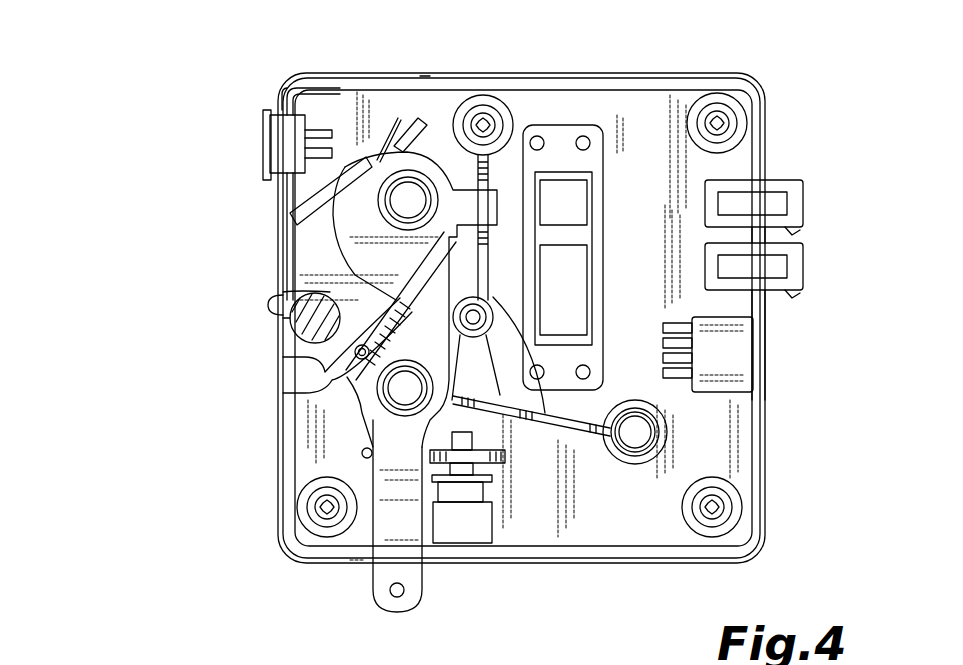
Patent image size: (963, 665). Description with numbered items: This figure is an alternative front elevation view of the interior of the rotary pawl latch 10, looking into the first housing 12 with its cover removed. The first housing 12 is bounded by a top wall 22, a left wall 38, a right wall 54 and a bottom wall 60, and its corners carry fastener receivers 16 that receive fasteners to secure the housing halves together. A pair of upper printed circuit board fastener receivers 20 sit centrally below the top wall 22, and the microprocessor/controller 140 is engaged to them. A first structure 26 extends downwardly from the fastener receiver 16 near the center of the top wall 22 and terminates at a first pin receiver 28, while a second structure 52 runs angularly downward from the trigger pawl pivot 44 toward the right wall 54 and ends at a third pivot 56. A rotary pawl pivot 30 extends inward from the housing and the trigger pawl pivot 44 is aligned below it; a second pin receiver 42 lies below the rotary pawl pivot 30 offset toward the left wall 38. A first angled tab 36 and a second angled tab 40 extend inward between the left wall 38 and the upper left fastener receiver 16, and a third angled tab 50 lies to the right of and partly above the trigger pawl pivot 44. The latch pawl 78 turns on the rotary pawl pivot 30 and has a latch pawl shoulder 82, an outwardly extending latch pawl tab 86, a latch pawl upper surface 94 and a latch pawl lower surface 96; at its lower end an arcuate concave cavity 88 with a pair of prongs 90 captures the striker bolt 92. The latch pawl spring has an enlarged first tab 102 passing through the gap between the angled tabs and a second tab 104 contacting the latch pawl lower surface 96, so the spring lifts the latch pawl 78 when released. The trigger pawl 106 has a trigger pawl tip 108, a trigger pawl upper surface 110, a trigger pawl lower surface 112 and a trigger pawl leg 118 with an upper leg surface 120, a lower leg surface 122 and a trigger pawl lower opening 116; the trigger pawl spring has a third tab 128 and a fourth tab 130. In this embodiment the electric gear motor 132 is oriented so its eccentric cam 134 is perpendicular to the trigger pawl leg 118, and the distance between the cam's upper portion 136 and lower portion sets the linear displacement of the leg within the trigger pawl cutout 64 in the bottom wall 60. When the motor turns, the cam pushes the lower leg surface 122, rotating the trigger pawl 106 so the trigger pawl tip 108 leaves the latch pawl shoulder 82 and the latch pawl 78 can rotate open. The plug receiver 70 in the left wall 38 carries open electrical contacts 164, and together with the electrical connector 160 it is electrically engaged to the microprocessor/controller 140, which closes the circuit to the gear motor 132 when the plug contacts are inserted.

The rotary pawl latch 10 is at (147, 100).
The first housing 12 is at (650, 127).
The fastener receivers 16 is at (488, 118).
The upper printed circuit board fastener receivers 20 is at (582, 138).
The top wall 22 is at (420, 76).
The first structure 26 is at (550, 167).
The first pin receiver 28 is at (495, 300).
The rotary pawl pivot 30 is at (460, 160).
The first angled tab 36 is at (393, 120).
The left wall 38 is at (283, 438).
The second angled tab 40 is at (347, 160).
The second pin receiver 42 is at (283, 410).
The trigger pawl pivot 44 is at (365, 432).
The third angled tab 50 is at (505, 380).
The second structure 52 is at (567, 424).
The right wall 54 is at (770, 430).
The third pivot 56 is at (643, 432).
The bottom wall 60 is at (683, 553).
The trigger pawl cutout 64 is at (362, 553).
The plug receiver 70 is at (278, 145).
The latch pawl 78 is at (345, 250).
The latch pawl shoulder 82 is at (412, 200).
The latch pawl tab 86 is at (520, 213).
The arcuate concave cavity 88 is at (282, 290).
The prongs 90 is at (280, 310).
The striker bolt 92 is at (295, 327).
The latch pawl upper surface 94 is at (340, 240).
The latch pawl lower surface 96 is at (350, 405).
The first tab 102 is at (383, 125).
The second tab 104 is at (313, 275).
The trigger pawl 106 is at (403, 388).
The trigger pawl tip 108 is at (340, 222).
The trigger pawl upper surface 110 is at (300, 297).
The trigger pawl lower surface 112 is at (557, 428).
The trigger pawl lower opening 116 is at (397, 597).
The trigger pawl leg 118 is at (385, 494).
The upper leg surface 120 is at (303, 485).
The lower leg surface 122 is at (423, 550).
The third tab 128 is at (585, 250).
The fourth tab 130 is at (362, 453).
The electric gear motor 132 is at (463, 513).
The eccentric cam 134 is at (498, 425).
The upper portion 136 is at (440, 465).
The microprocessor/controller 140 is at (585, 280).
The electrical connector 160 is at (733, 347).
The open electrical contacts 164 is at (280, 92).